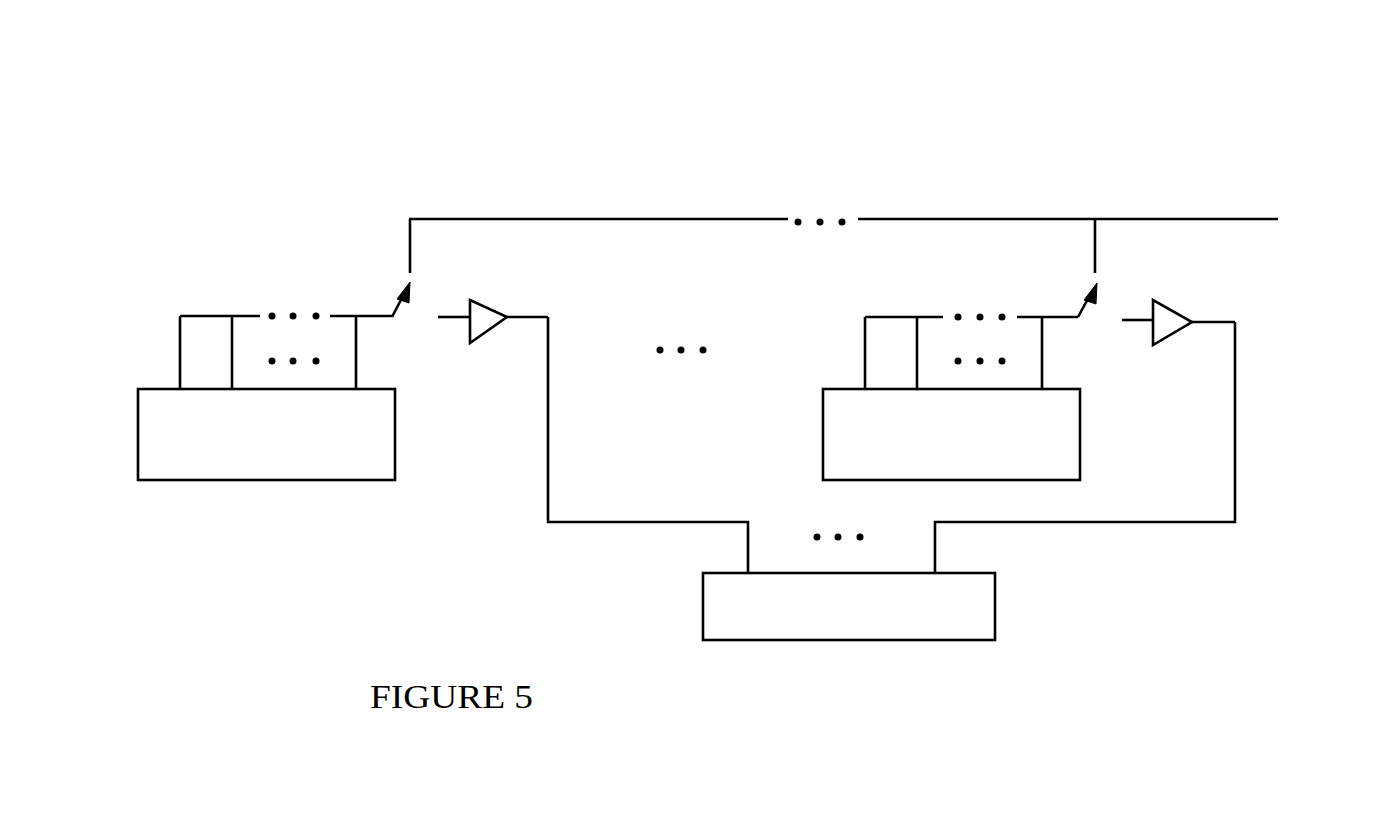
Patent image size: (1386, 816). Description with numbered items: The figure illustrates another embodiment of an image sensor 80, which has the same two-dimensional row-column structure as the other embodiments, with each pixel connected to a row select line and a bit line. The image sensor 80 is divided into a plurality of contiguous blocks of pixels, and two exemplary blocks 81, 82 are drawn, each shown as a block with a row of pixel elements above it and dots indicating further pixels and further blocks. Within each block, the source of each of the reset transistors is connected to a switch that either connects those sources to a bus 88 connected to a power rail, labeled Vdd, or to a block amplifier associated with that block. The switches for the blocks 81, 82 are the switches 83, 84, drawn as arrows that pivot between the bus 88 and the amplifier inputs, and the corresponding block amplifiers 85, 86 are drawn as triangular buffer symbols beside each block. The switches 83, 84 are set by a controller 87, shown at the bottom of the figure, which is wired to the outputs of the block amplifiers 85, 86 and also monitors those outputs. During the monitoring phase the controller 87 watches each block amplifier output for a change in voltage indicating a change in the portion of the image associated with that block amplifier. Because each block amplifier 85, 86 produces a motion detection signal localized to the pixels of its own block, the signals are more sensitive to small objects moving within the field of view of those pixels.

The image sensor 80 is at (210, 163).
The block of pixels 81 is at (204, 472).
The block of pixels 82 is at (833, 433).
The switch 83 is at (375, 315).
The switch 84 is at (1062, 313).
The block amplifier 85 is at (485, 337).
The block amplifier 86 is at (1172, 317).
The controller 87 is at (891, 633).
The bus 88 is at (1015, 217).